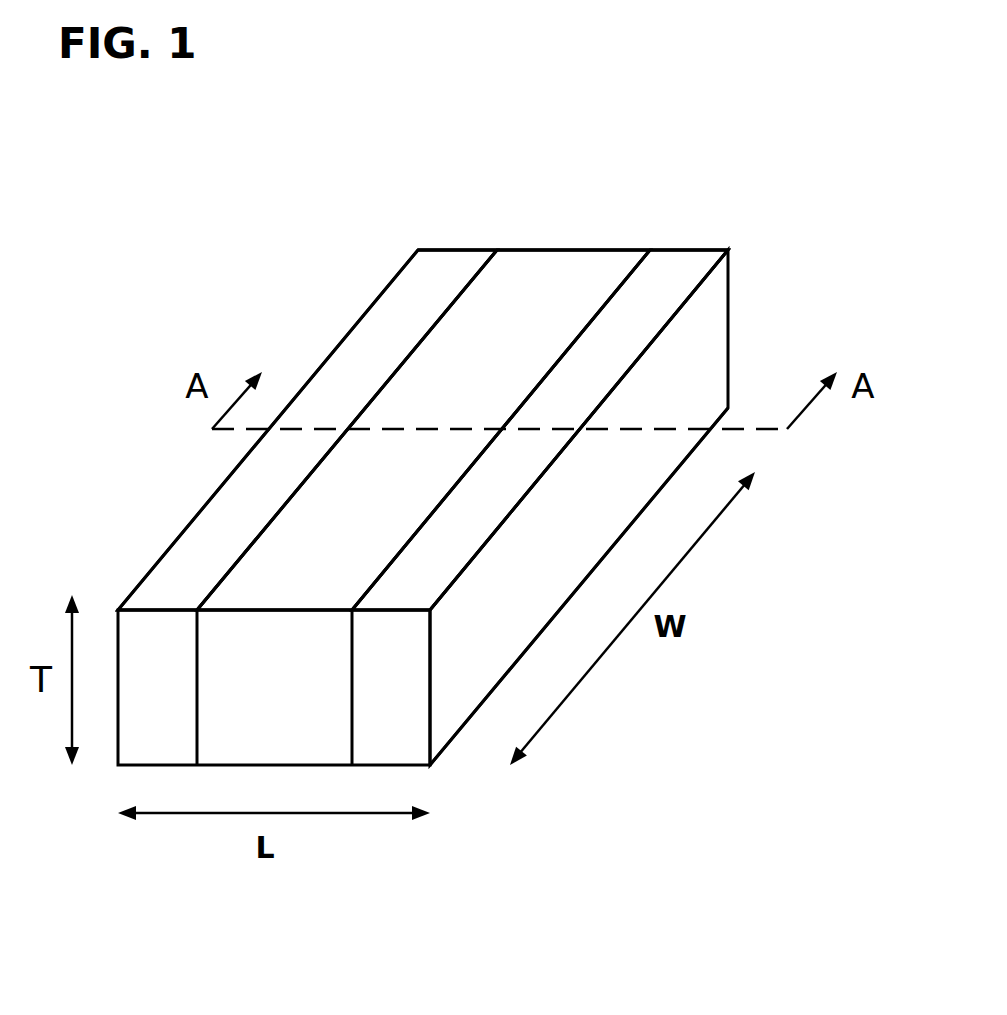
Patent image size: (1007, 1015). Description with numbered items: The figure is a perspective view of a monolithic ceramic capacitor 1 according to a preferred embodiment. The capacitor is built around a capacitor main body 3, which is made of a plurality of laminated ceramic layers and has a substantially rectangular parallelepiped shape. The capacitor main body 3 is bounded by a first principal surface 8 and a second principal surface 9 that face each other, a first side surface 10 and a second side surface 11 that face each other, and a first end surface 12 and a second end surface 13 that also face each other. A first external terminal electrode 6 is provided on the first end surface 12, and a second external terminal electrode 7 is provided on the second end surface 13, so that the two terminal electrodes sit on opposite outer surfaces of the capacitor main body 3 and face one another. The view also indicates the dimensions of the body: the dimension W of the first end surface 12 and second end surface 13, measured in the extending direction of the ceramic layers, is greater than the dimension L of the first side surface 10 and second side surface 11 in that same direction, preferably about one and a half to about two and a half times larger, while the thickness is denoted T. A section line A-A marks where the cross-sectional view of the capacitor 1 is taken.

The monolithic ceramic capacitor 1 is at (171, 189).
The capacitor main body 3 is at (547, 236).
The first external terminal electrode 6 is at (208, 525).
The second external terminal electrode 7 is at (717, 319).
The first principal surface 8 is at (515, 297).
The second principal surface 9 is at (282, 733).
The first side surface 10 is at (583, 297).
The second side surface 11 is at (268, 695).
The first end surface 12 is at (352, 372).
The second end surface 13 is at (647, 458).